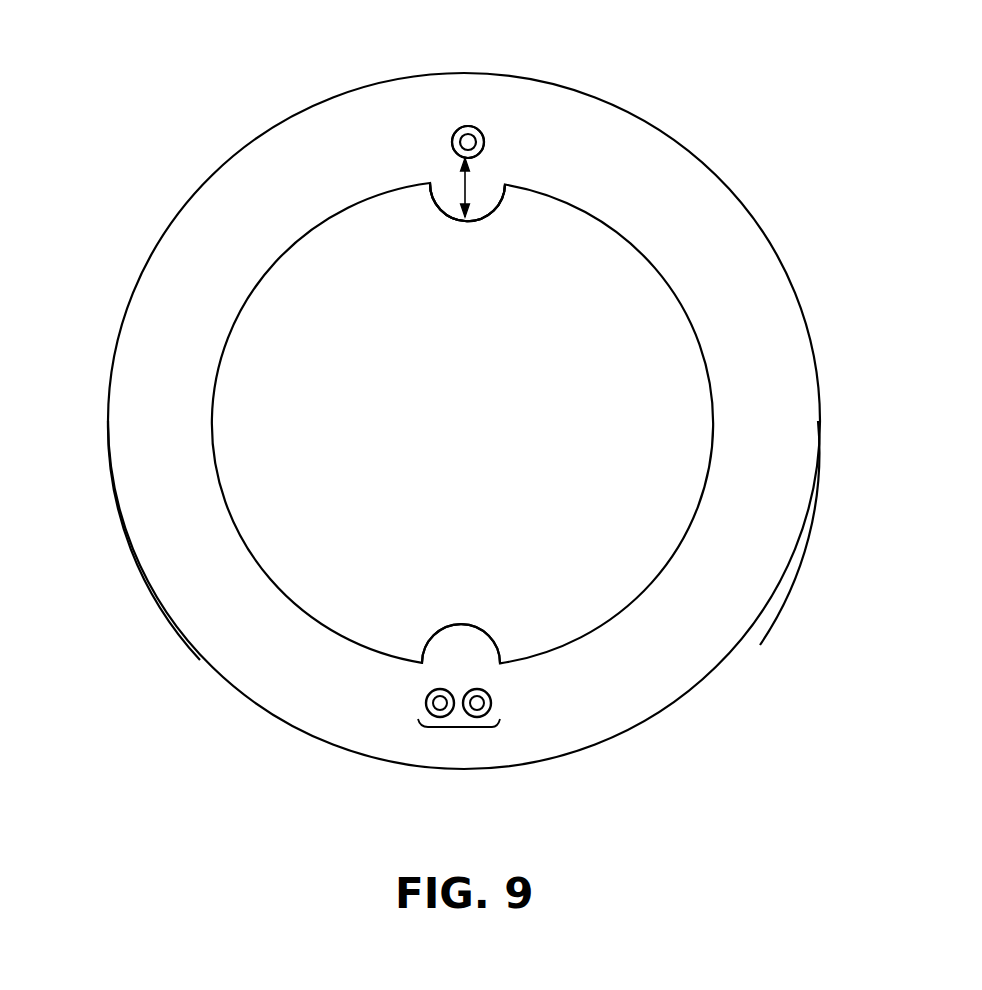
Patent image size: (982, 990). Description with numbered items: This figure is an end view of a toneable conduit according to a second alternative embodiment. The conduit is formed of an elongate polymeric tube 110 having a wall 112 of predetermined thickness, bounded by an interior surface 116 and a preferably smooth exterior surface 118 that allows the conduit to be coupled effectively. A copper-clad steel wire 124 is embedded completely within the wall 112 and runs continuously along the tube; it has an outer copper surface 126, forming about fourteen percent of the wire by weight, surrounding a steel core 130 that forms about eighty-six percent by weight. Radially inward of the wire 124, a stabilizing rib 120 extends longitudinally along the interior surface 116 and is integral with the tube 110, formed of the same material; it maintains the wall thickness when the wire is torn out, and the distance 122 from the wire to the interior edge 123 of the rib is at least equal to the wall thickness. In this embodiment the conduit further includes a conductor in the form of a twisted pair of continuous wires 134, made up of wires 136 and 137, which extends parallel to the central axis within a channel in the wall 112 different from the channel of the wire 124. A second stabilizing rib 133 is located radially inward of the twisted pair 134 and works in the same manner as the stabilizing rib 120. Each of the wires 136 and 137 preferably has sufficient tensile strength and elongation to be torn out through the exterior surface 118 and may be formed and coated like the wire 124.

The elongate polymeric tube 110 is at (728, 188).
The wall 112 is at (800, 434).
The interior surface 116 is at (691, 318).
The exterior surface 118 is at (190, 642).
The stabilizing rib 120 is at (552, 212).
The distance 122 is at (447, 203).
The interior edge 123 is at (463, 221).
The copper-clad steel wire 124 is at (487, 128).
The outer copper surface 126 is at (463, 127).
The steel core 130 is at (455, 136).
The stabilizing rib 133 is at (463, 650).
The twisted pair of continuous wires 134 is at (460, 727).
The continuous wire 136 is at (418, 712).
The continuous wire 137 is at (498, 708).